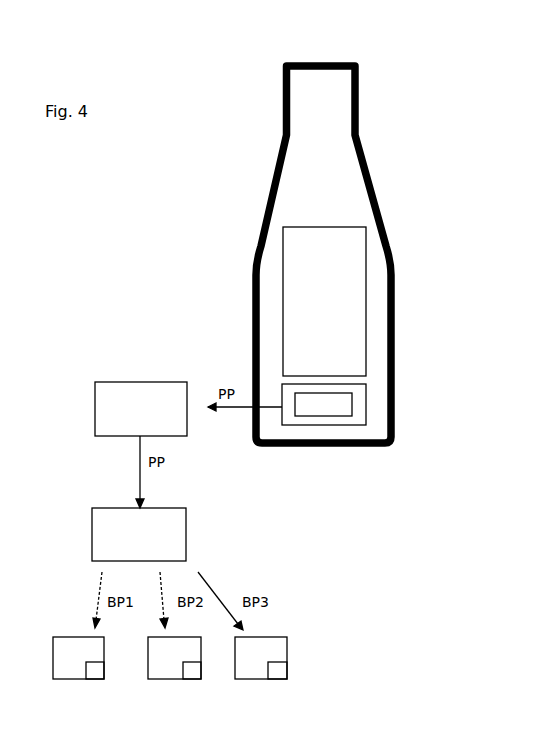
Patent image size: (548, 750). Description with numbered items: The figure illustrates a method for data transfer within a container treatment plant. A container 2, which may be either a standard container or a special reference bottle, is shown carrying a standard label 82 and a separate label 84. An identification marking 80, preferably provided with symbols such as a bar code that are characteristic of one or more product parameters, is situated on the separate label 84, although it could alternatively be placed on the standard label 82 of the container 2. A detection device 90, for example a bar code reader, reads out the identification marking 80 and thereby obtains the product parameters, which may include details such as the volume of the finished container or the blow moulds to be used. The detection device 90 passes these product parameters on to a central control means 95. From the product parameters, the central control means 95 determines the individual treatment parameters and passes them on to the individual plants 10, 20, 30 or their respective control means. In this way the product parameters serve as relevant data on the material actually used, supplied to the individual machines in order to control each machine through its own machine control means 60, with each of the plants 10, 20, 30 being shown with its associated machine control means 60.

The container 2 is at (347, 193).
The standard label 82 is at (355, 305).
The separate label 84 is at (366, 397).
The identification marking 80 is at (352, 415).
The detection device 90 is at (138, 395).
The central control means 95 is at (173, 538).
The plant 10 is at (78, 658).
The plant 20 is at (174, 658).
The plant 30 is at (261, 658).
The machine control means 60 is at (95, 680).